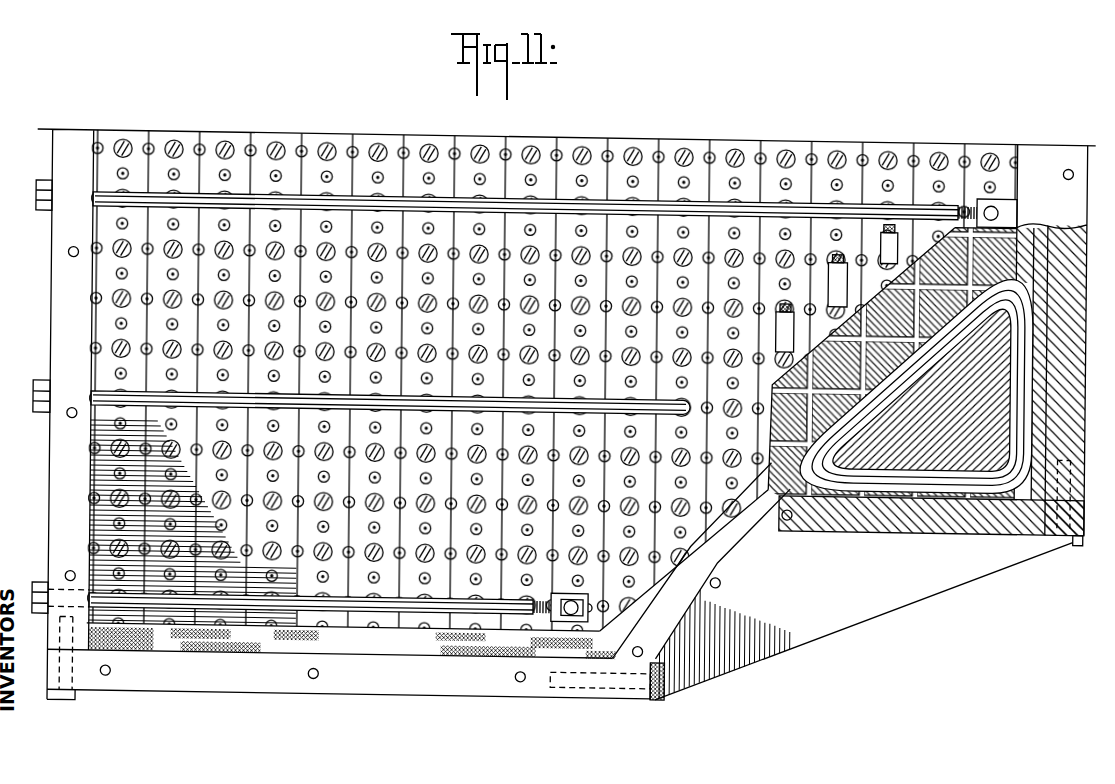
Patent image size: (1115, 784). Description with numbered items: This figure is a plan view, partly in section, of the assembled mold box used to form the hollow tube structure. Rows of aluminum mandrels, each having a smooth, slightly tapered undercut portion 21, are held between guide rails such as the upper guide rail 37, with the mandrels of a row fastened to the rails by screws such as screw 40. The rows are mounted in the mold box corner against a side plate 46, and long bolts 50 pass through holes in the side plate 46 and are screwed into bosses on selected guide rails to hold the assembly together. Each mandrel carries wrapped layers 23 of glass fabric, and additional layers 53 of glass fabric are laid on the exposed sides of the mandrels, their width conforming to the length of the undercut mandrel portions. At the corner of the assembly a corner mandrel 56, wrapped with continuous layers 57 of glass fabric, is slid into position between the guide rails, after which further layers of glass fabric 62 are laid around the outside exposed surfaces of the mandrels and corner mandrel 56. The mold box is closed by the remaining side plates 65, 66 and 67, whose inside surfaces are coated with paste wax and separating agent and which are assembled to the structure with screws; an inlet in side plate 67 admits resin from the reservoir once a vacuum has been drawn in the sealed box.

The undercut portion 21 is at (960, 348).
The layers of glass fabric 23 is at (1001, 310).
The upper guide rail 37 is at (160, 468).
The screw 40 is at (90, 545).
The side plate 46 is at (52, 343).
The long bolts 50 is at (136, 201).
The layers of glass fabric 53 is at (432, 620).
The corner mandrel 56 is at (901, 452).
The continuous layers of glass fabric 57 is at (861, 483).
The layers of glass fabric 62 is at (522, 632).
The side plate 65 is at (342, 690).
The side plate 66 is at (692, 605).
The side plate 67 is at (1024, 526).